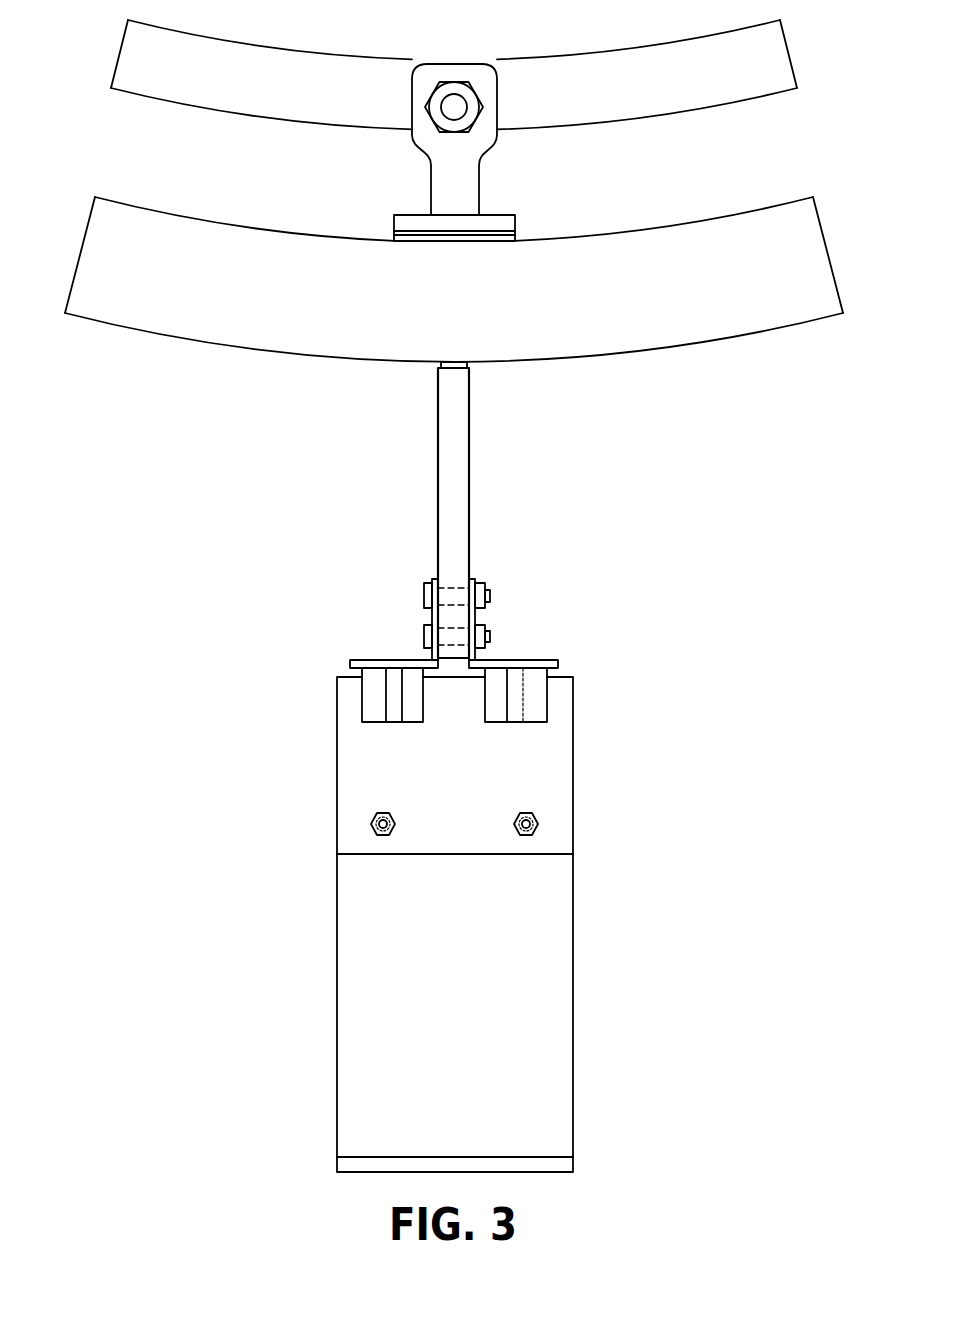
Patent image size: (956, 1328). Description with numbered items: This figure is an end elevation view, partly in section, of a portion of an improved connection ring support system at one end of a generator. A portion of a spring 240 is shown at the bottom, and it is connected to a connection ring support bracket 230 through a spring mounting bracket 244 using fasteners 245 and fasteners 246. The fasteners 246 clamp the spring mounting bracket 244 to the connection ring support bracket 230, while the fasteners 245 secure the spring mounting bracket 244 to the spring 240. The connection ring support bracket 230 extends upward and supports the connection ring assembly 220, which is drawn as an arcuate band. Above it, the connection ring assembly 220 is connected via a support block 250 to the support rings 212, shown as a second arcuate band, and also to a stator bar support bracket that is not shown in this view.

The support rings 212 is at (637, 97).
The connection ring assembly 220 is at (244, 308).
The support block 250 is at (423, 83).
The connection ring support bracket 230 is at (440, 457).
The fasteners 246 is at (458, 637).
The spring mounting bracket 244 is at (434, 780).
The fasteners 245 is at (372, 829).
The spring 240 is at (435, 1050).